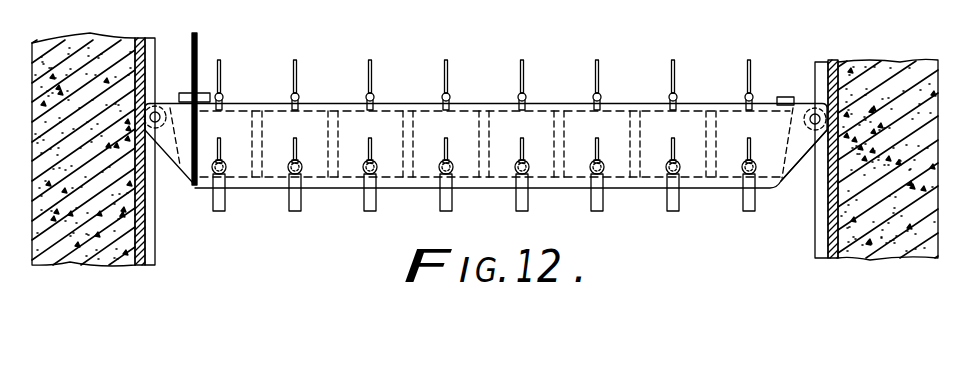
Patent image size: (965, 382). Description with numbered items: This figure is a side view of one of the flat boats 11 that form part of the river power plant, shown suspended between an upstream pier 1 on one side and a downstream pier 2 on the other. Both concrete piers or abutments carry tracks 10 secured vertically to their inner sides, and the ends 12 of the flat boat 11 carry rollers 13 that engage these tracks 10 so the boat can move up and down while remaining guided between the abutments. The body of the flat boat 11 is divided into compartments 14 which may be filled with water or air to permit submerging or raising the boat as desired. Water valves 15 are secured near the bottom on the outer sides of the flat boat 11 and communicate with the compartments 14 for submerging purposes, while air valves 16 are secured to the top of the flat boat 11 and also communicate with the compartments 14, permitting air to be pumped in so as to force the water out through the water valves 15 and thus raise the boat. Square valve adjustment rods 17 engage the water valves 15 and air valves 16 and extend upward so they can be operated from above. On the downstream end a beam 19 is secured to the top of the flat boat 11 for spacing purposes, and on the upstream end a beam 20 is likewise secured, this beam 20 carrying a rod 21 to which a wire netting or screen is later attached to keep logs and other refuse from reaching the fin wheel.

The upstream pier 1 is at (83, 35).
The downstream pier 2 is at (870, 70).
The track 10 is at (140, 230).
The flat boat 11 is at (420, 168).
The end of flat boat 12 is at (167, 143).
The roller 13 is at (158, 104).
The compartment 14 is at (527, 122).
The water valve 15 is at (297, 177).
The air valve 16 is at (372, 96).
The square valve adjustment rod 17 is at (368, 72).
The beam 19 is at (782, 97).
The beam 20 is at (203, 96).
The rod 21 is at (198, 42).